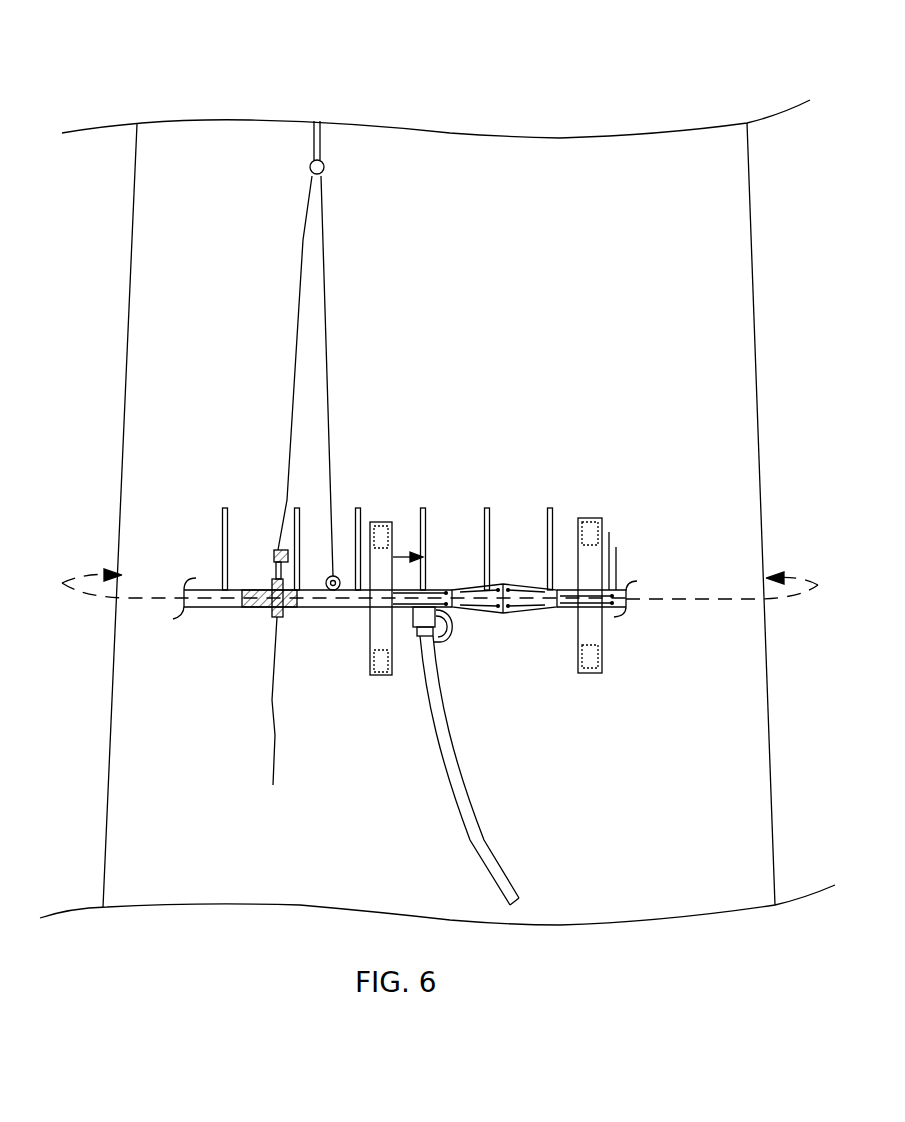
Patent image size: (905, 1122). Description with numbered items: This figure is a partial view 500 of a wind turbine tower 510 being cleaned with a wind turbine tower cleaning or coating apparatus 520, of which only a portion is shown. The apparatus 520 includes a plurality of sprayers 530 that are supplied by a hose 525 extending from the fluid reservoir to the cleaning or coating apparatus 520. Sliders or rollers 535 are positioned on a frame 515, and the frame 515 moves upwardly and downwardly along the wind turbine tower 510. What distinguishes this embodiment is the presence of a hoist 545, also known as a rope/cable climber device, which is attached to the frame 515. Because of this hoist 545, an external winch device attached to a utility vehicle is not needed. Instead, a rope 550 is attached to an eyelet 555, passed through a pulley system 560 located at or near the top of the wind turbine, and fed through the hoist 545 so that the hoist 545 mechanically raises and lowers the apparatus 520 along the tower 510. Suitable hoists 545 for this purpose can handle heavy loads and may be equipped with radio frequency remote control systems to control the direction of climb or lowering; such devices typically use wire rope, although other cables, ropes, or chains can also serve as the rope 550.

The partial view 500 is at (193, 95).
The wind turbine tower 510 is at (444, 304).
The frame 515 is at (361, 604).
The wind turbine tower cleaning or coating apparatus 520 is at (188, 463).
The hose 525 is at (448, 746).
The sprayers 530 is at (547, 528).
The sliders or rollers 535 is at (392, 536).
The hoist 545 is at (252, 608).
The rope 550 is at (293, 423).
The eyelet 555 is at (330, 586).
The pulley system 560 is at (325, 169).